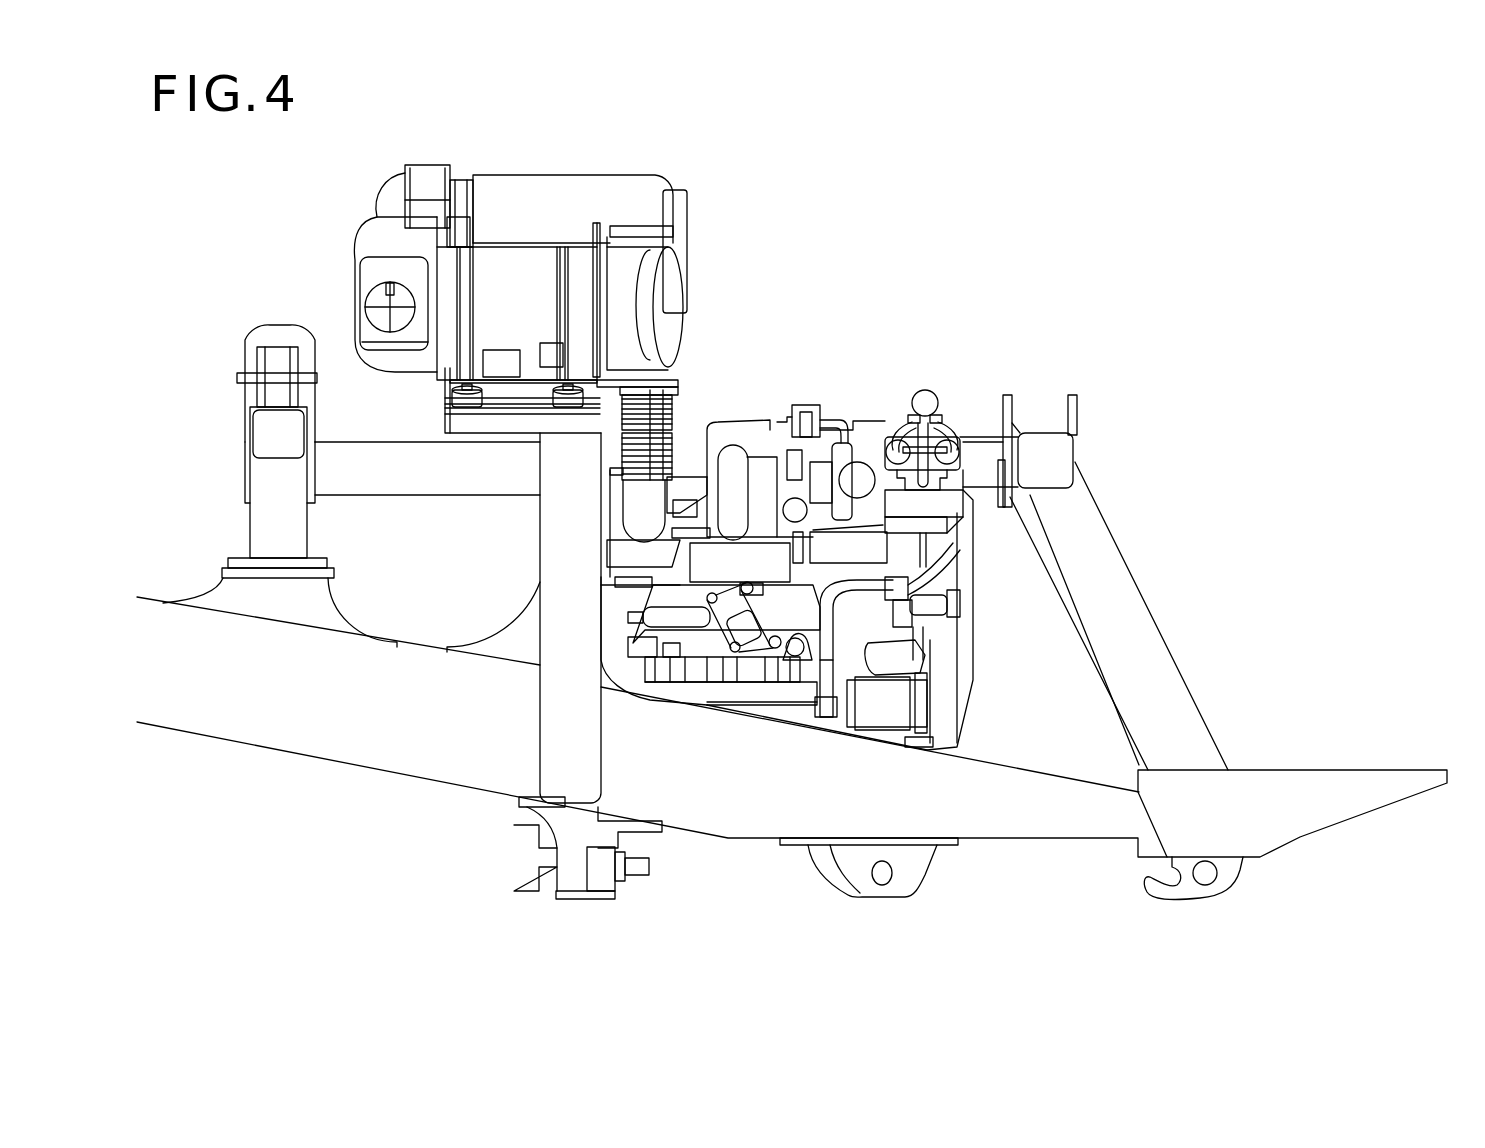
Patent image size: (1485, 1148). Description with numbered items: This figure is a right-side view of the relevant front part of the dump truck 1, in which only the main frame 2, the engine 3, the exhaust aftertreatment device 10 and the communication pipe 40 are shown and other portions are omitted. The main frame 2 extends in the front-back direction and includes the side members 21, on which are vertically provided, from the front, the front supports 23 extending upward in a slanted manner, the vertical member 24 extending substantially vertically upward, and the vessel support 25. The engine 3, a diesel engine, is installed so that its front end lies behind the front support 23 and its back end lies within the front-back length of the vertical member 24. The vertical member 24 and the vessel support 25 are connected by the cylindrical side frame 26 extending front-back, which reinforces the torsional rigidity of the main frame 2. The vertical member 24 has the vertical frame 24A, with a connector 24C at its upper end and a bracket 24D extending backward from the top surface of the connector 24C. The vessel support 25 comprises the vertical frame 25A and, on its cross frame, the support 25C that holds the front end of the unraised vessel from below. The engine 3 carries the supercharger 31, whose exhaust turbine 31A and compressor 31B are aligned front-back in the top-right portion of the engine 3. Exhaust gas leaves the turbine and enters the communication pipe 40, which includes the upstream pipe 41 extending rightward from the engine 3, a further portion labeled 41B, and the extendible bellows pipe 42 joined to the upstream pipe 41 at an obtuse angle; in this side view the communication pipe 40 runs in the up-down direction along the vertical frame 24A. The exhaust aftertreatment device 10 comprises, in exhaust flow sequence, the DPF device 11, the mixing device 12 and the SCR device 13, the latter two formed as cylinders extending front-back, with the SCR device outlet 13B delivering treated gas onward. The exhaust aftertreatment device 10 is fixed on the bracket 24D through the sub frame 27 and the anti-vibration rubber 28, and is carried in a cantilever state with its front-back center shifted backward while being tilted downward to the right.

The dump truck 1 is at (833, 152).
The main frame 2 is at (415, 805).
The engine 3 is at (866, 400).
The exhaust aftertreatment device 10 is at (533, 160).
The DPF device 11 is at (668, 188).
The mixing device 12 is at (590, 186).
The SCR device 13 is at (655, 270).
The SCR device outlet 13B is at (370, 301).
The side members 21 is at (712, 812).
The front supports 23 is at (1128, 597).
The vertical member 24 is at (528, 571).
The vertical frames 24A is at (555, 630).
The connector 24C is at (600, 545).
The bracket 24D is at (445, 420).
The vessel support 25 is at (228, 488).
The vertical frames 25A is at (275, 523).
The supports 25C is at (270, 365).
The side frame 26 is at (371, 483).
The sub frame 27 is at (445, 400).
The anti-vibration rubber 28 is at (566, 393).
The supercharger 31 is at (825, 345).
The exhaust turbine 31A is at (738, 435).
The compressor 31B is at (800, 410).
The communication pipe 40 is at (682, 408).
The upstream pipe 41 is at (622, 500).
The duct lower end 41B is at (620, 532).
The bellows pipe 42 is at (672, 430).